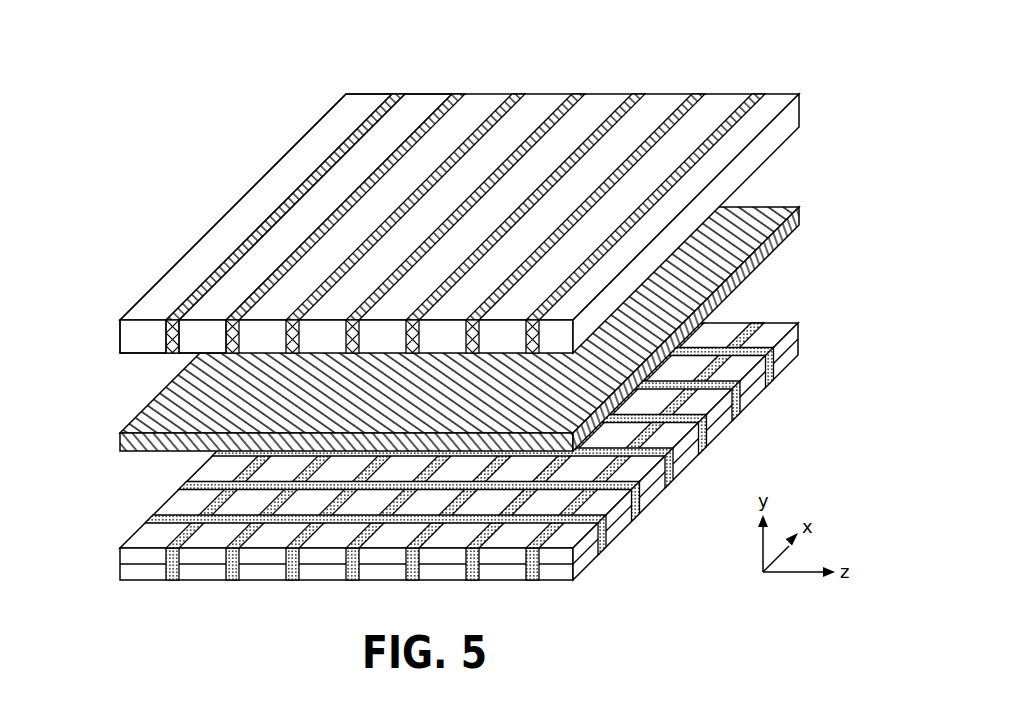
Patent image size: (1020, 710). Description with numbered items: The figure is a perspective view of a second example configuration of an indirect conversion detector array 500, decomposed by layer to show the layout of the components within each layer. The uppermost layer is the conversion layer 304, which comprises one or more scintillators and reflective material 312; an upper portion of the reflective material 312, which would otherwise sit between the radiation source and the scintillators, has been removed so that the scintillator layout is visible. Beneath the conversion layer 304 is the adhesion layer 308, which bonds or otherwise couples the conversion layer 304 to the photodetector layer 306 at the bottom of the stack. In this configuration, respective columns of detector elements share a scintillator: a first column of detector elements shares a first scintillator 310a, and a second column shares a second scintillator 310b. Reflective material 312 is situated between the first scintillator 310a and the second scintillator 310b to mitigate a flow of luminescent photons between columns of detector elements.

The detector array 500 is at (149, 144).
The conversion layer 304 is at (798, 113).
The adhesion layer 308 is at (798, 216).
The photodetector layer 306 is at (798, 335).
The first scintillator 310a is at (336, 108).
The second scintillator 310b is at (414, 106).
The reflective material 312 is at (388, 85).